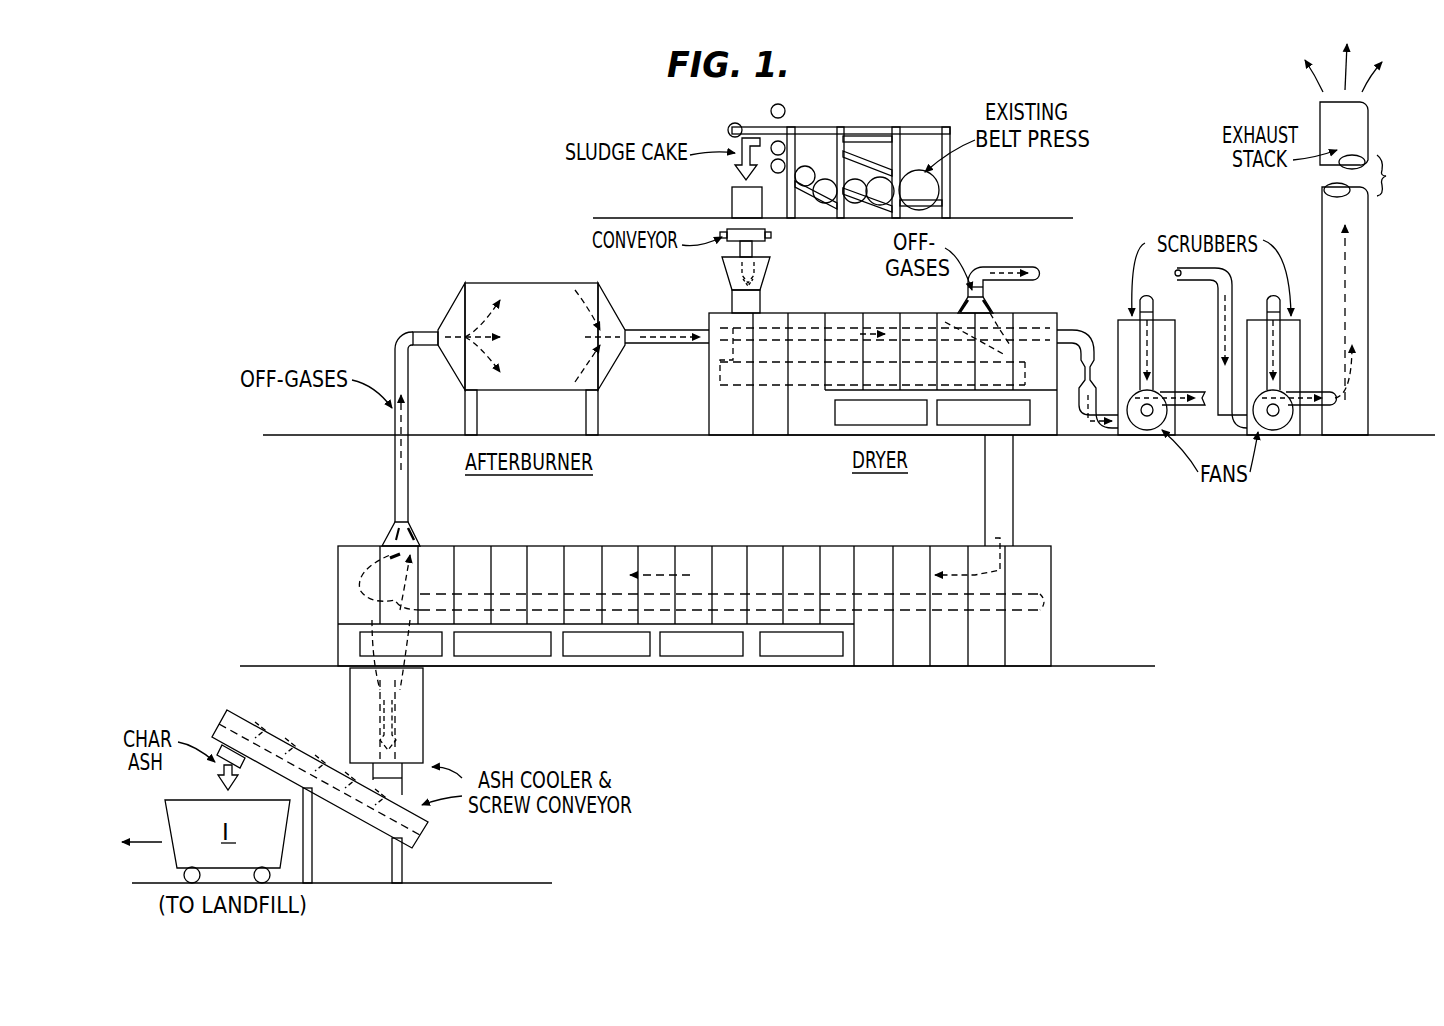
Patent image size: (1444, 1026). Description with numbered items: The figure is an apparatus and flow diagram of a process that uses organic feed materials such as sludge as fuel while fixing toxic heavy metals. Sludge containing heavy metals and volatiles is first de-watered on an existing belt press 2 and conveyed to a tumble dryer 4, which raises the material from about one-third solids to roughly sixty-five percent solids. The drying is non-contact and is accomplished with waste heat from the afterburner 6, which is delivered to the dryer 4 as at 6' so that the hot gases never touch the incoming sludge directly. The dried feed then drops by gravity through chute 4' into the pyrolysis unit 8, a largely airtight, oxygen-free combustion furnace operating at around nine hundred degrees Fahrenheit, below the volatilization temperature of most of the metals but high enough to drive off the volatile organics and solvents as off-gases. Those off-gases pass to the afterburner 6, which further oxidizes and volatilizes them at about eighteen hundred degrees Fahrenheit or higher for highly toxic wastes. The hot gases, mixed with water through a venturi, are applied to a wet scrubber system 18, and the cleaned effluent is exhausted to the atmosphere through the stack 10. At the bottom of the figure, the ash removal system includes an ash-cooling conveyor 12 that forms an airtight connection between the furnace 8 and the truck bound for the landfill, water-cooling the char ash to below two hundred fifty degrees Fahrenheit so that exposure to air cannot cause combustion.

The belt press 2 is at (804, 172).
The tumble dryer 4 is at (862, 374).
The chute 4' is at (996, 505).
The afterburner 6 is at (573, 328).
The afterburner off-gas heat path 6' is at (928, 308).
The pyrolysis unit 8 is at (832, 550).
The stack 10 is at (1368, 236).
The ash-cooling conveyor 12 is at (385, 775).
The wet scrubber system 18 is at (1172, 344).